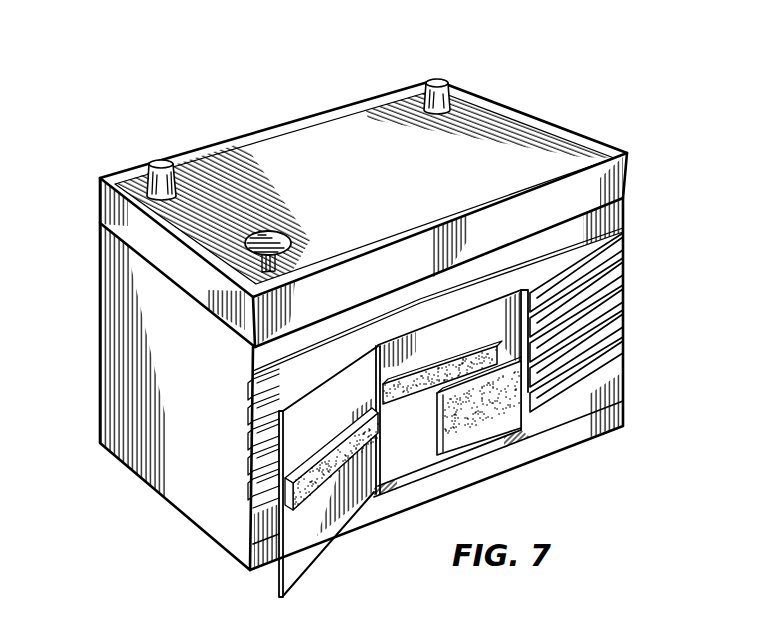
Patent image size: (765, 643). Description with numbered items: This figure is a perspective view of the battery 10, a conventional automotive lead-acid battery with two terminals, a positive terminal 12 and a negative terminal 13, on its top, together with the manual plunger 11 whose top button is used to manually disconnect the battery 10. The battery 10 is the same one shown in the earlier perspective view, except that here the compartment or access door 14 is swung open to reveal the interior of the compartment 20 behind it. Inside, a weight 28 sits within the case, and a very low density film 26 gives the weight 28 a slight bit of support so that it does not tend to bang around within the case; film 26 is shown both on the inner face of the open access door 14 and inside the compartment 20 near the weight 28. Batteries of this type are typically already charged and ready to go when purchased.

The battery 10 is at (528, 87).
The manual plunger 11 is at (297, 200).
The positive terminal 12 is at (437, 78).
The negative terminal 13 is at (157, 161).
The access door 14 is at (351, 502).
The opening 20 is at (413, 350).
The very low density film 26 is at (454, 357).
The weight 28 is at (497, 408).